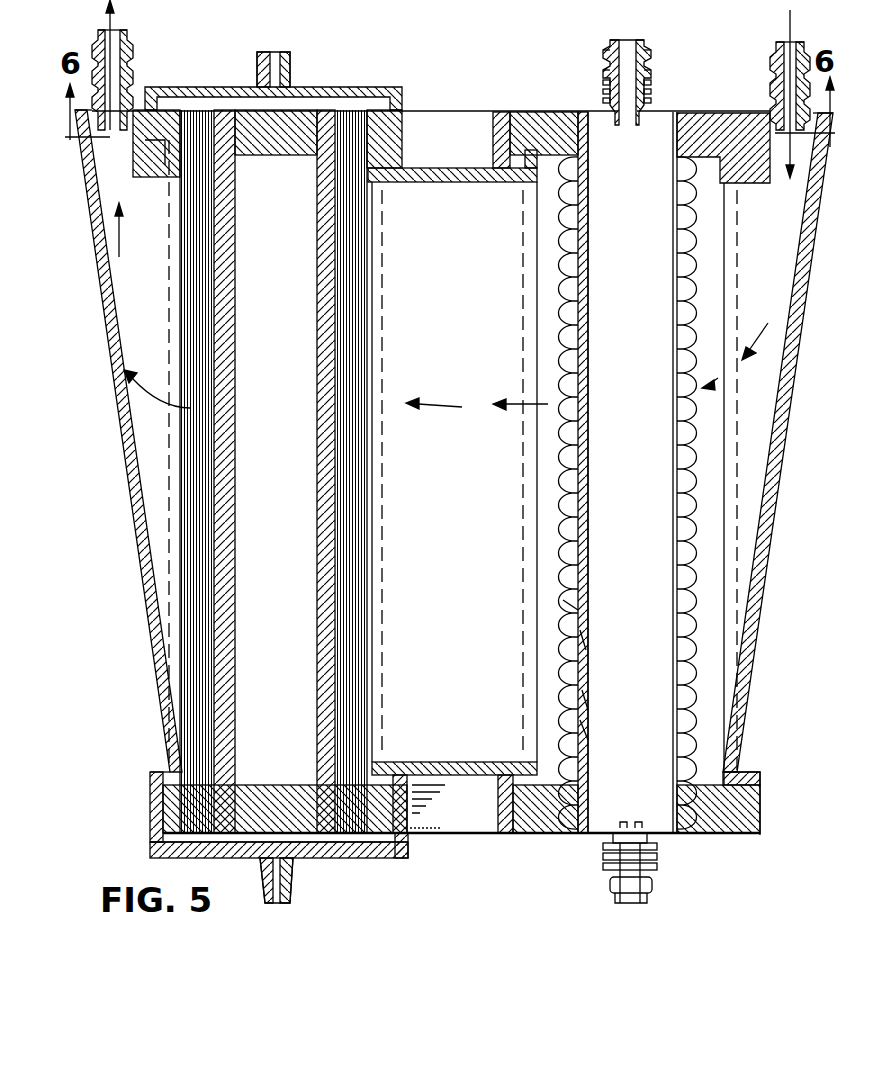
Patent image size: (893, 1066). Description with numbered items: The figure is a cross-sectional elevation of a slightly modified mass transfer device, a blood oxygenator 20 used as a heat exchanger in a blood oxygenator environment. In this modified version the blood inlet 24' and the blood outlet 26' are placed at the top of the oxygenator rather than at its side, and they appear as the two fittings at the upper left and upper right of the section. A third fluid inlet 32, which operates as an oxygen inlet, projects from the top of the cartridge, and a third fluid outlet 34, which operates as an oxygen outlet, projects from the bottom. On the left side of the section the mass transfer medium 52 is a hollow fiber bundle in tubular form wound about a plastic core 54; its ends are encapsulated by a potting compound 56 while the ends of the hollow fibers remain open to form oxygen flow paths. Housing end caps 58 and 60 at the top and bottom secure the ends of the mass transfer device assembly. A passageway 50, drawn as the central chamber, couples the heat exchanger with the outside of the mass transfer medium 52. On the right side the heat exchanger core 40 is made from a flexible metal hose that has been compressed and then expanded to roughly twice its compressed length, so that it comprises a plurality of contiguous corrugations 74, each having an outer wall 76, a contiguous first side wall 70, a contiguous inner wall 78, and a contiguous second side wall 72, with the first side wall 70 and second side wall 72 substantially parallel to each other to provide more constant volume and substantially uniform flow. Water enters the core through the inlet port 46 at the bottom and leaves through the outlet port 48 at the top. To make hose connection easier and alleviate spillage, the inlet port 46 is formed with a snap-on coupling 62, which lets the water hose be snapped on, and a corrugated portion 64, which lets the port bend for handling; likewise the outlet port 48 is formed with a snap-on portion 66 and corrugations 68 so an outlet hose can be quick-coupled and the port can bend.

The oxygenator 20 is at (505, 840).
The blood inlet 24' is at (768, 79).
The blood outlet 26' is at (132, 74).
The third fluid inlet 32 is at (276, 60).
The third fluid outlet 34 is at (285, 890).
The core 40 is at (582, 472).
The inlet port 46 is at (660, 875).
The outlet port 48 is at (652, 67).
The passageway 50 is at (462, 302).
The mass transfer medium 52 is at (196, 112).
The plastic core 54 is at (228, 238).
The potting compound 56 is at (160, 110).
The housing end cap 58 is at (312, 88).
The housing end cap 60 is at (327, 853).
The snap-on coupling 62 is at (652, 886).
The corrugated portion 64 is at (658, 850).
The snap-on portion 66 is at (646, 58).
The corrugations 68 is at (652, 91).
The first side wall 70 is at (583, 641).
The second side wall 72 is at (586, 570).
The corrugations 74 is at (585, 733).
The outer wall 76 is at (563, 603).
The inner wall 78 is at (588, 700).